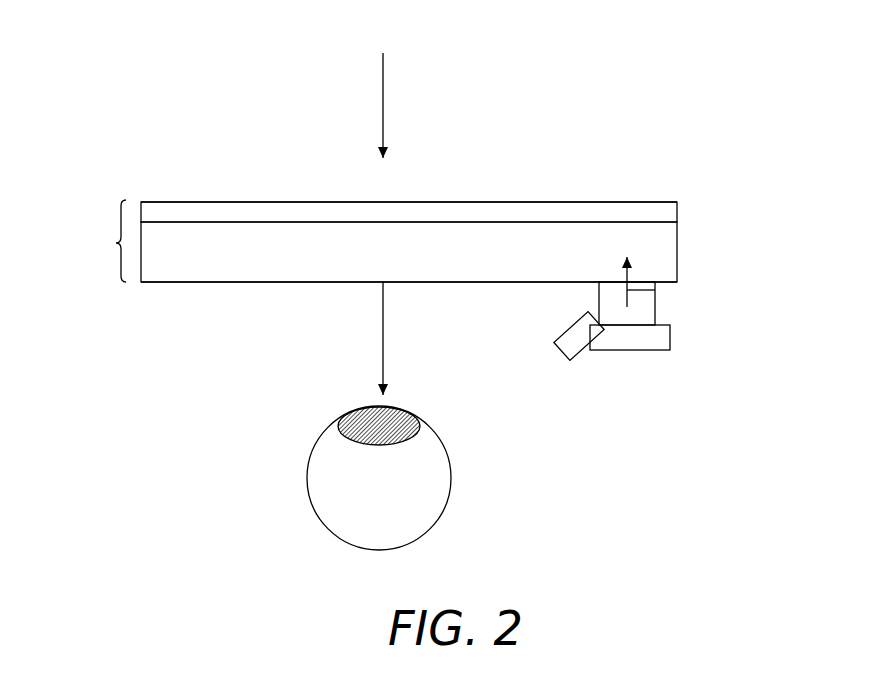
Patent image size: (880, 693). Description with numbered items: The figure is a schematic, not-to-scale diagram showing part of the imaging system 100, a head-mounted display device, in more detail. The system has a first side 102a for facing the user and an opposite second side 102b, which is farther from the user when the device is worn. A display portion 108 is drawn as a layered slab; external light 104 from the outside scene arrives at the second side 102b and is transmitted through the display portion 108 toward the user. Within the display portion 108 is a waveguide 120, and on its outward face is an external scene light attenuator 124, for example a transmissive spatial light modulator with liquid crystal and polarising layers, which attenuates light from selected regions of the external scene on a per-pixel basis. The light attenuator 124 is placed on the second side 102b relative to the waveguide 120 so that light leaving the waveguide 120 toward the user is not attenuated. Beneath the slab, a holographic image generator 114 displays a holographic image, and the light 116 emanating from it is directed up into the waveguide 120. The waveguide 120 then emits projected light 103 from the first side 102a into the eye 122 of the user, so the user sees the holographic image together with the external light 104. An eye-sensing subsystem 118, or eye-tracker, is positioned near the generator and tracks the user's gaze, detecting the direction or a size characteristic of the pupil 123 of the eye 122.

The imaging system 100 is at (266, 49).
The first side 102a is at (211, 305).
The second side 102b is at (209, 187).
The projected light 103 is at (385, 323).
The external light 104 is at (384, 98).
The display portion 108 is at (118, 243).
The holographic image generator 114 is at (627, 352).
The light 116 is at (657, 289).
The eye-sensing subsystem 118 is at (563, 357).
The waveguide 120 is at (470, 261).
The eye 122 is at (440, 440).
The pupil 123 is at (395, 407).
The external scene light attenuator 124 is at (505, 202).